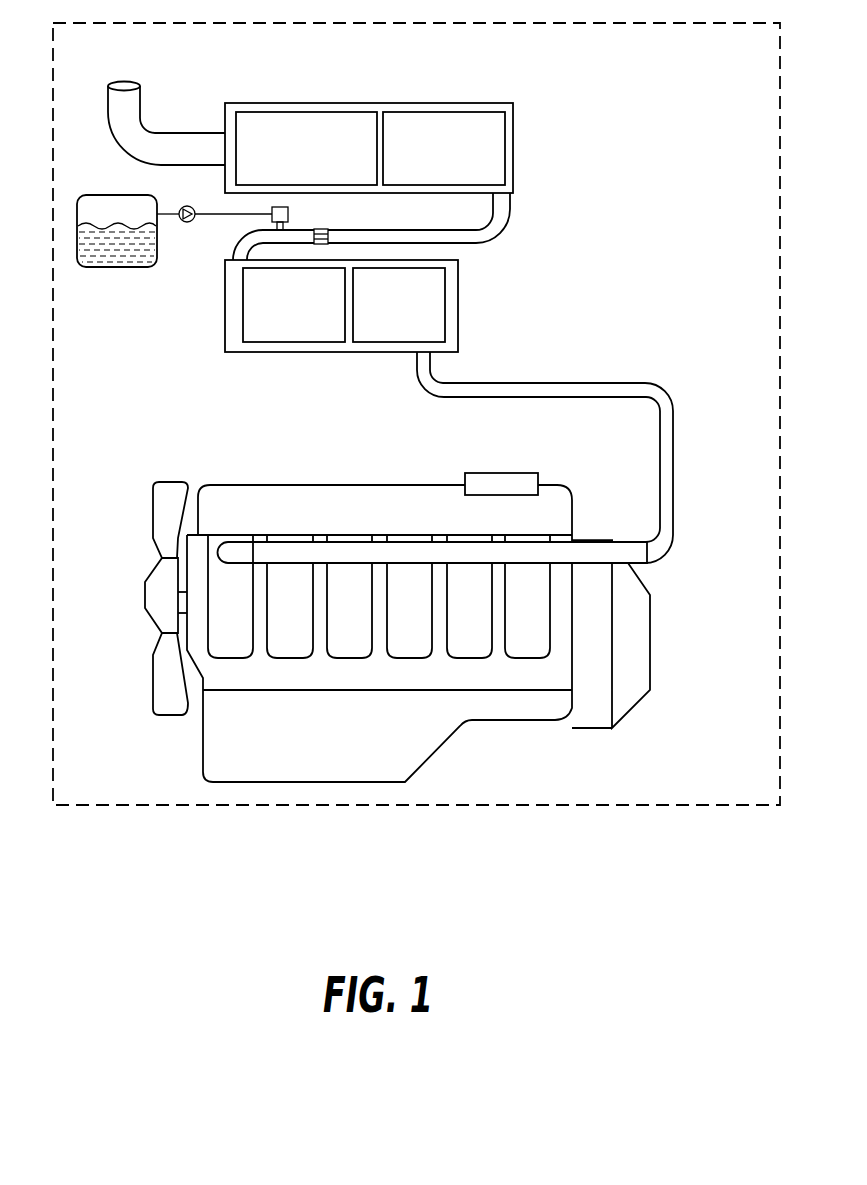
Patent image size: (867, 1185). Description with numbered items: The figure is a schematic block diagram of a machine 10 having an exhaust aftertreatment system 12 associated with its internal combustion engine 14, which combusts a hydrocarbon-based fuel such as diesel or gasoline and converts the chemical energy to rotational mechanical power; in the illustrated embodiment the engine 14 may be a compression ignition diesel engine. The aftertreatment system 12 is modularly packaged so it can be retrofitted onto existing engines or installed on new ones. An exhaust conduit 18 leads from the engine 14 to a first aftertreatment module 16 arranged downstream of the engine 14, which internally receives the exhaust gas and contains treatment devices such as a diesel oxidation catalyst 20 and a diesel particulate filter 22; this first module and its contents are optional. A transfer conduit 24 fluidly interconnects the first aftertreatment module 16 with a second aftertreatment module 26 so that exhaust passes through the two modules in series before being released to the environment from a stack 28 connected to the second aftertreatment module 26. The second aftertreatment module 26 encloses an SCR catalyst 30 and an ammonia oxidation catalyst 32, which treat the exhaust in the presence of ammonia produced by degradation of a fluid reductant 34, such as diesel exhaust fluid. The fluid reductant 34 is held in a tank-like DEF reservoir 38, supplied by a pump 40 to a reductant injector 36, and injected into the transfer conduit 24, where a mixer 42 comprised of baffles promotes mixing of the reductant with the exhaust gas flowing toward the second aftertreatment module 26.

The machine 10 is at (757, 785).
The exhaust aftertreatment system 12 is at (632, 73).
The internal combustion engine 14 is at (674, 653).
The first aftertreatment module 16 is at (458, 320).
The exhaust conduit 18 is at (602, 382).
The diesel oxidation catalyst 20 is at (443, 295).
The diesel particulate filter 22 is at (282, 337).
The transfer conduit 24 is at (500, 230).
The second aftertreatment module 26 is at (368, 103).
The stack 28 is at (143, 127).
The SCR catalyst 30 is at (435, 120).
The ammonia oxidation catalyst 32 is at (280, 118).
The fluid reductant 34 is at (108, 267).
The reductant injector 36 is at (272, 219).
The DEF reservoir 38 is at (118, 195).
The pump 40 is at (185, 222).
The mixer 42 is at (323, 230).